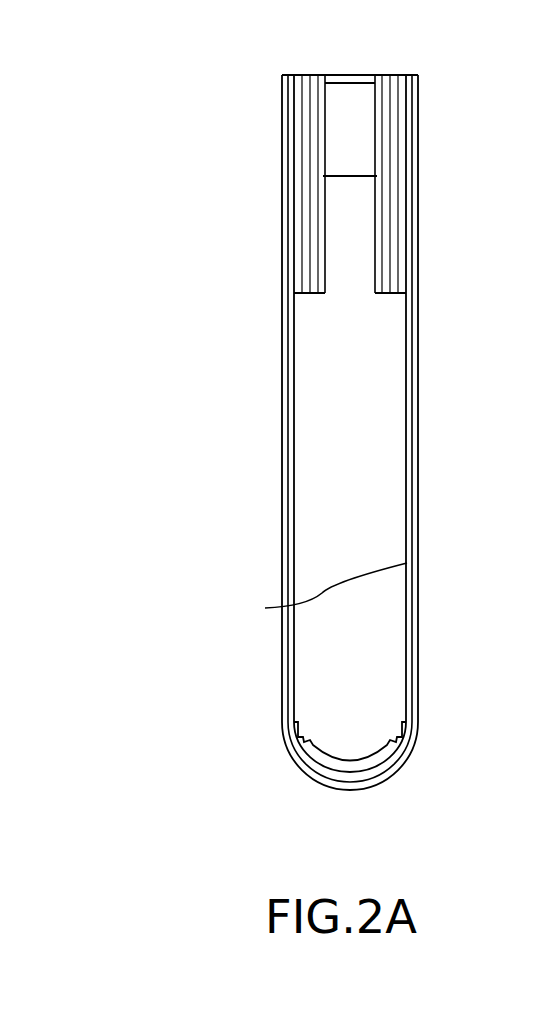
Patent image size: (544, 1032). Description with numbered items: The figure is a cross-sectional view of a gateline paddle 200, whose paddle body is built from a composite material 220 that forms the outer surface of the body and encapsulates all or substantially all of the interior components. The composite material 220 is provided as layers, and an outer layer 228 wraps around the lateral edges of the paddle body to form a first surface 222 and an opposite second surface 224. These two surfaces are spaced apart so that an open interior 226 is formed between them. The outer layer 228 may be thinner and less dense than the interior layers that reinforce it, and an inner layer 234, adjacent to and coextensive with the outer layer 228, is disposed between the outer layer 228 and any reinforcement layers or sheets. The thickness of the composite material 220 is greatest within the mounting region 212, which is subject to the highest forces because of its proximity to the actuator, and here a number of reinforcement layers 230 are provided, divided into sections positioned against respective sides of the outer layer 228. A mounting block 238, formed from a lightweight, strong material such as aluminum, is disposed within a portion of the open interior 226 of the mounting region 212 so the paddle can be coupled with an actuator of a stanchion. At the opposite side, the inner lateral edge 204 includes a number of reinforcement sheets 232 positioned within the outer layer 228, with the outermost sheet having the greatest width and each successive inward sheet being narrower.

The gateline paddle 200 is at (304, 438).
The mounting region 212 is at (301, 156).
The mounting block 238 is at (357, 98).
The reinforcement layers 230 is at (303, 270).
The first surface 222 is at (270, 413).
The second surface 224 is at (432, 381).
The outer layer 228 is at (282, 450).
The open interior 226 is at (378, 497).
The composite material 220 is at (339, 469).
The inner layer 234 is at (315, 594).
The reinforcement sheets 232 is at (327, 772).
The inner lateral edge 204 is at (390, 802).